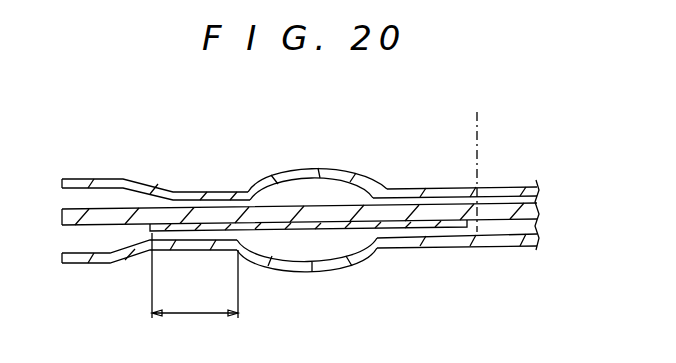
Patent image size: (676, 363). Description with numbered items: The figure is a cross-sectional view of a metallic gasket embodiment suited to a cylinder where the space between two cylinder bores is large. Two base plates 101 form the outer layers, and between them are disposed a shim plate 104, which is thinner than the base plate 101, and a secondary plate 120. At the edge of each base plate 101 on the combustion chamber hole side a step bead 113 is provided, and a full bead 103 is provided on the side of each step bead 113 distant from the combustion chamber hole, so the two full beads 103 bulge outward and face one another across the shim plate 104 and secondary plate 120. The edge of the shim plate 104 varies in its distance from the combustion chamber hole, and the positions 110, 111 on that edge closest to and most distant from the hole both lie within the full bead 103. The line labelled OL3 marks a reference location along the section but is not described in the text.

The base plate 101 is at (436, 188).
The full bead 103 is at (312, 170).
The shim plate 104 is at (283, 233).
The position closest to the combustion chamber hole 110 is at (187, 288).
The position most distant from the combustion chamber hole 111 is at (239, 297).
The step bead 113 is at (108, 181).
The secondary plate 120 is at (357, 217).
The overlap length line OL3 is at (474, 156).